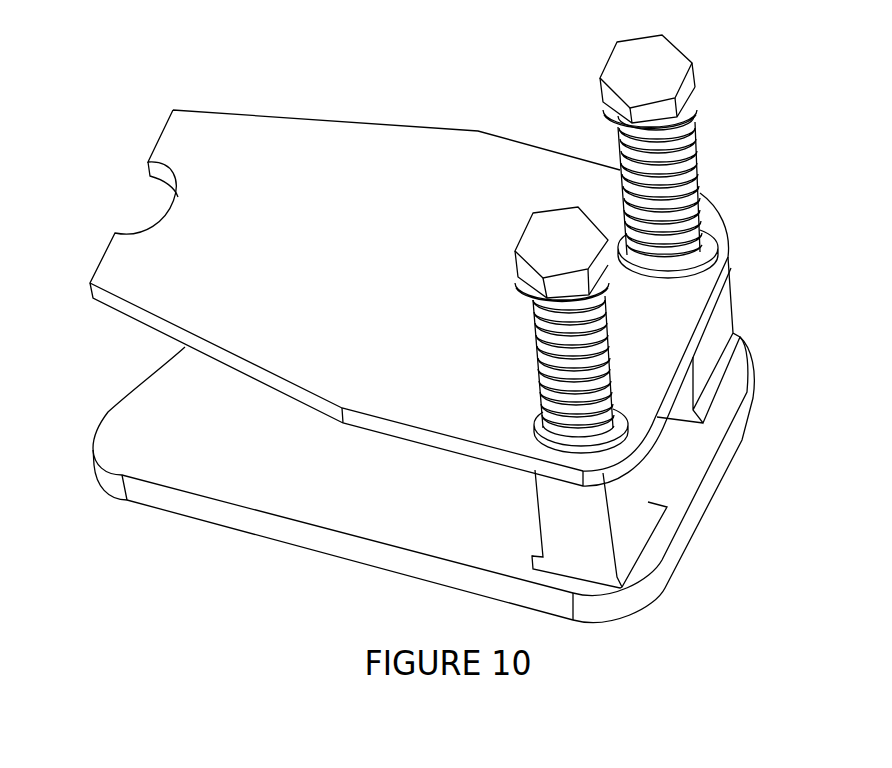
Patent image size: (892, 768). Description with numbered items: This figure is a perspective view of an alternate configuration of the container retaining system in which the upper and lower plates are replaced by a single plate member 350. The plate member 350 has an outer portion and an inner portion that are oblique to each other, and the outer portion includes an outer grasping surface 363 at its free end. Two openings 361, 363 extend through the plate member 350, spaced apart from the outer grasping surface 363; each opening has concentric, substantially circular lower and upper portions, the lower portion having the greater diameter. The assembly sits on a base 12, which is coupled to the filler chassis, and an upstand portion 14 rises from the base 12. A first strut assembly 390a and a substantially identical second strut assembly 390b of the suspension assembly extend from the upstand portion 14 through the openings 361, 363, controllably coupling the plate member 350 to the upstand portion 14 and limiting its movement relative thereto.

The base 12 is at (238, 537).
The upstand portion 14 is at (550, 505).
The plate member 350 is at (353, 102).
The opening 361 is at (530, 413).
The outer grasping surface / opening 363 is at (130, 197).
The first strut assembly 390a is at (542, 346).
The second strut assembly 390b is at (705, 152).